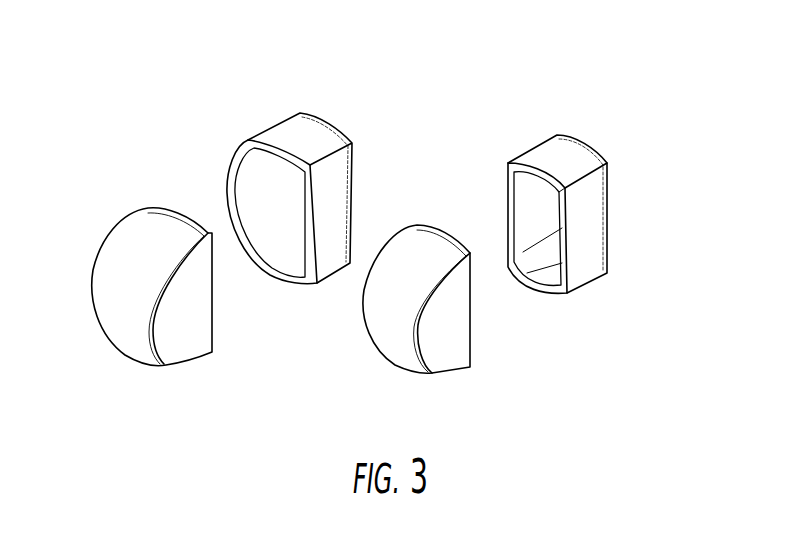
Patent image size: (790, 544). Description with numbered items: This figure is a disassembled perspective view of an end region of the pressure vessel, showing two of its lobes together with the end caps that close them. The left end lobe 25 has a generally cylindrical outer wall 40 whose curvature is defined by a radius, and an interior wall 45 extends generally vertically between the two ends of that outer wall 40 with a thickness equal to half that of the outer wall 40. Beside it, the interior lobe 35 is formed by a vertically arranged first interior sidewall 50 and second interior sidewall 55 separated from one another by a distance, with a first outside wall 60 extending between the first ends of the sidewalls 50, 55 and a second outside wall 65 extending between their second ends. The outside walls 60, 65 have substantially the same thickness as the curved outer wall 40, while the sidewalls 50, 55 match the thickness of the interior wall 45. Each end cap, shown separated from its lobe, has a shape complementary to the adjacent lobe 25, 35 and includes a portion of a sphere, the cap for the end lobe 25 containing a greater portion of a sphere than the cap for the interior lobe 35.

The left end lobe 25 is at (293, 151).
The interior lobe 35 is at (586, 219).
The cylindrical outer wall 40 is at (228, 173).
The interior wall 45 is at (350, 110).
The first interior sidewall 50 is at (507, 210).
The second interior sidewall 55 is at (633, 150).
The first outside wall 60 is at (565, 153).
The second outside wall 65 is at (540, 288).